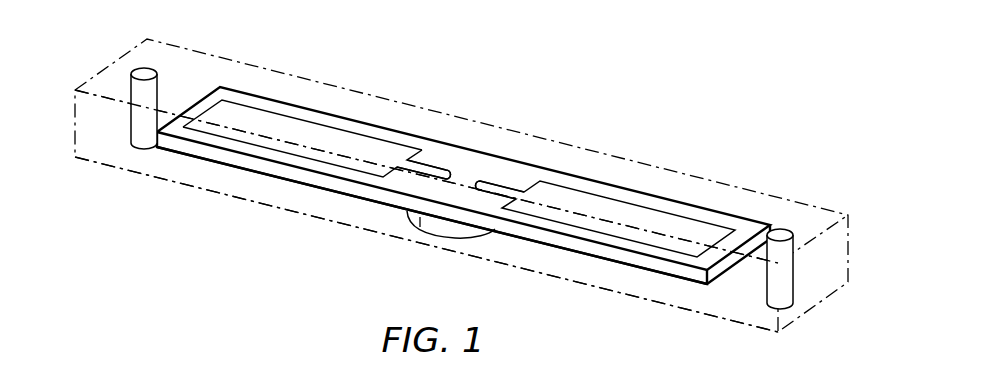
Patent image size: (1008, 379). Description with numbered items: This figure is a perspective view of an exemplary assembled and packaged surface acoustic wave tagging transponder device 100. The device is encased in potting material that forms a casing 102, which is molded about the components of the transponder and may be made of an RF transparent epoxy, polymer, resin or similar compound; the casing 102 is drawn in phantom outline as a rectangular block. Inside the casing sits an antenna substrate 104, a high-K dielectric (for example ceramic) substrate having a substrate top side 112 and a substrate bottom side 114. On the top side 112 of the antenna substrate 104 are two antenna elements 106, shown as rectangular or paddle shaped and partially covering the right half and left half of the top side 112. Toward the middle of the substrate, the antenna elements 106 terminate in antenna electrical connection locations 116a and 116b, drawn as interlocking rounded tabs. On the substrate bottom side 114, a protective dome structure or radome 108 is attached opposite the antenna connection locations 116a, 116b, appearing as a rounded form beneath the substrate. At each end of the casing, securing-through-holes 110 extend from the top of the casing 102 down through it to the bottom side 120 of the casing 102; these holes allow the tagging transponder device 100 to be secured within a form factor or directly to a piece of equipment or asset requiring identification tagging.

The tagging transponder device 100 is at (630, 86).
The casing 102 is at (722, 177).
The antenna substrate 104 is at (600, 248).
The antenna elements 106 is at (353, 143).
The radome 108 is at (425, 243).
The securing-through-holes 110 is at (144, 69).
The substrate top side 112 is at (257, 103).
The substrate bottom side 114 is at (350, 195).
The antenna connection location 116a is at (497, 183).
The antenna connection location 116b is at (433, 168).
The bottom side of the casing 120 is at (210, 190).